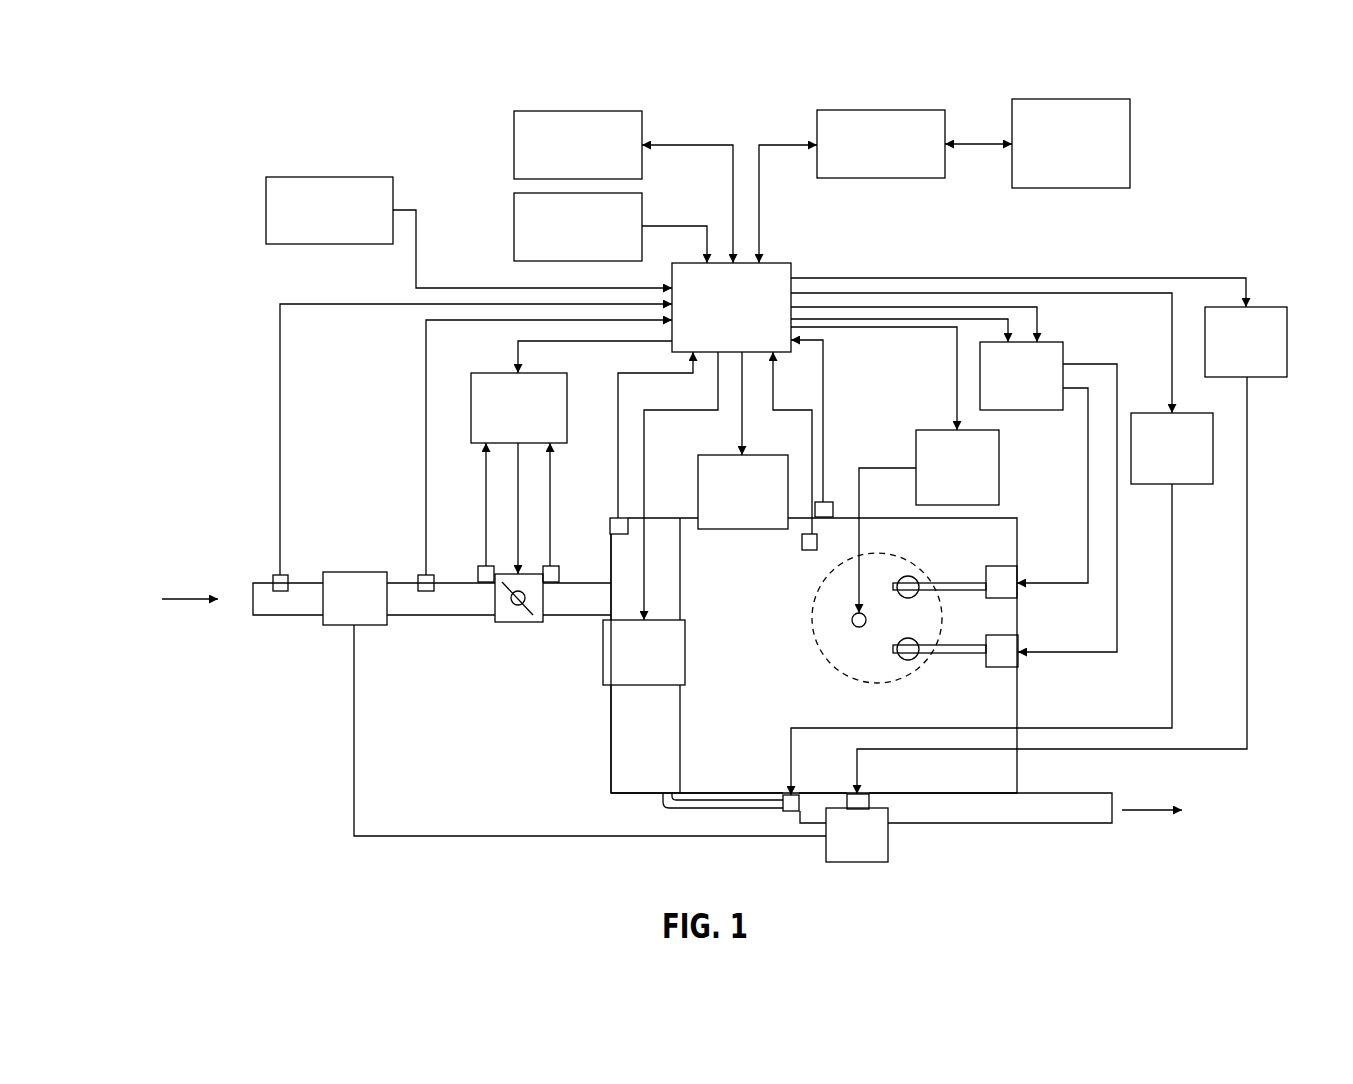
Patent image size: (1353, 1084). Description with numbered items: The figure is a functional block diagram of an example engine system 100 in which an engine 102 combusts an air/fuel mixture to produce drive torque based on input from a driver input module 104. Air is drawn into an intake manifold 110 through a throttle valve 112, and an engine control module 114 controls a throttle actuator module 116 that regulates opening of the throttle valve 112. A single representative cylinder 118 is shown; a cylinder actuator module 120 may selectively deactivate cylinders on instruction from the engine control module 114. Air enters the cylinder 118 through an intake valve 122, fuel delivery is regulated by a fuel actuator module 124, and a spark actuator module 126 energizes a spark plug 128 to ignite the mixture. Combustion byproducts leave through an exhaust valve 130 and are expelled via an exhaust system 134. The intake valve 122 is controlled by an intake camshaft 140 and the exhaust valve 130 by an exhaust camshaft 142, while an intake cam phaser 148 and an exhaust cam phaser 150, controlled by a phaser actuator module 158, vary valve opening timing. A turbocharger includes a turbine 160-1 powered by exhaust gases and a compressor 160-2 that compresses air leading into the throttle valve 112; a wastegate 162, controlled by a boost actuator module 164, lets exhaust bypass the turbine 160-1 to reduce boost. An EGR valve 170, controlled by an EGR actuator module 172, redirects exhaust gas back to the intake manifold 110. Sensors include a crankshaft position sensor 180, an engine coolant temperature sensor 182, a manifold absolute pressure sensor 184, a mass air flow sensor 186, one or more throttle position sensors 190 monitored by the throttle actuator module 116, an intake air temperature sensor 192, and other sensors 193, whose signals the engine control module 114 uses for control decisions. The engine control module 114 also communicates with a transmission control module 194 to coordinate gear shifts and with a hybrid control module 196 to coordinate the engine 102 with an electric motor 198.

The engine system 100 is at (170, 127).
The engine 102 is at (1017, 529).
The driver input module 104 is at (514, 226).
The intake manifold 110 is at (611, 730).
The throttle valve 112 is at (516, 622).
The engine control module 114 is at (791, 270).
The throttle actuator module 116 is at (486, 373).
The cylinder 118 is at (838, 680).
The cylinder actuator module 120 is at (760, 455).
The intake valve 122 is at (908, 576).
The fuel actuator module 124 is at (662, 685).
The spark actuator module 126 is at (999, 466).
The spark plug 128 is at (852, 622).
The exhaust valve 130 is at (910, 660).
The exhaust system 134 is at (1083, 823).
The intake camshaft 140 is at (963, 583).
The exhaust camshaft 142 is at (960, 653).
The intake cam phaser 148 is at (1001, 566).
The exhaust cam phaser 150 is at (1003, 667).
The phaser actuator module 158 is at (1063, 351).
The turbine 160-1 is at (888, 840).
The compressor 160-2 is at (339, 625).
The wastegate 162 is at (869, 795).
The boost actuator module 164 is at (1267, 377).
The EGR valve 170 is at (789, 811).
The EGR actuator module 172 is at (1194, 484).
The crankshaft position sensor 180 is at (826, 502).
The engine coolant temperature sensor 182 is at (809, 550).
The manifold absolute pressure sensor 184 is at (612, 518).
The mass air flow sensor 186 is at (418, 575).
The throttle position sensor 190 is at (481, 582).
The intake air temperature sensor 192 is at (273, 575).
The other sensors 193 is at (266, 210).
The transmission control module 194 is at (514, 143).
The hybrid control module 196 is at (881, 178).
The electric motor 198 is at (1083, 188).